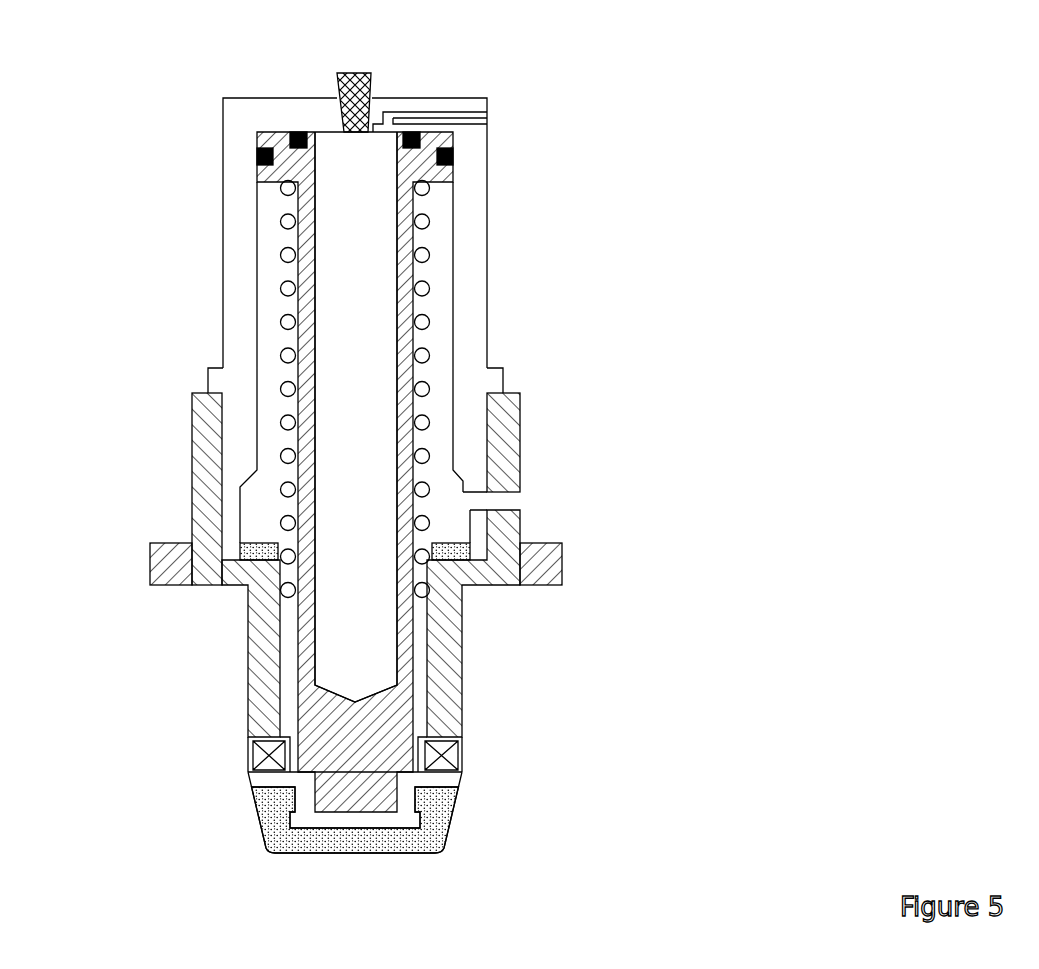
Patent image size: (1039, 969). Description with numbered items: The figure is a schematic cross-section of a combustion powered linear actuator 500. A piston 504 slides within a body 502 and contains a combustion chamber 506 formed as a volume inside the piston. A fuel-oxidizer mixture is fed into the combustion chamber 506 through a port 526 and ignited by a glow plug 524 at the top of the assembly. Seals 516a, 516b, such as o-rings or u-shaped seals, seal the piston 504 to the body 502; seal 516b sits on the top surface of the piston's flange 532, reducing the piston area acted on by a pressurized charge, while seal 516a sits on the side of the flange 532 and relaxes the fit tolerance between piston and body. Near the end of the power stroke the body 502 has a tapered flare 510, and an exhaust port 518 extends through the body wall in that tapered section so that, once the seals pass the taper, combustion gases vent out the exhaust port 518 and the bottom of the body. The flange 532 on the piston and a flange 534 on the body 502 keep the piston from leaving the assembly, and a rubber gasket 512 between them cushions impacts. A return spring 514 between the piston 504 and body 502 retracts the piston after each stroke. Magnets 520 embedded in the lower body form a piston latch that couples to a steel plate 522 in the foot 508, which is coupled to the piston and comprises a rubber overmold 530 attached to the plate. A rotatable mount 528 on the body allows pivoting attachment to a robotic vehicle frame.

The combustion powered linear actuator 500 is at (697, 118).
The body 502 is at (190, 165).
The piston 504 is at (305, 272).
The combustion chamber 506 is at (372, 220).
The foot 508 is at (228, 785).
The tapered flare 510 is at (462, 475).
The rubber gasket 512 is at (262, 550).
The return spring 514 is at (290, 325).
The seal 516a is at (258, 152).
The seal 516b is at (289, 137).
The exhaust port 518 is at (525, 500).
The magnets 520 is at (452, 755).
The steel plate 522 is at (448, 777).
The glow plug 524 is at (340, 82).
The port 526 is at (500, 117).
The rotatable mount 528 is at (543, 572).
The overmold 530 is at (273, 810).
The flange 532 is at (413, 165).
The flange 534 is at (262, 572).